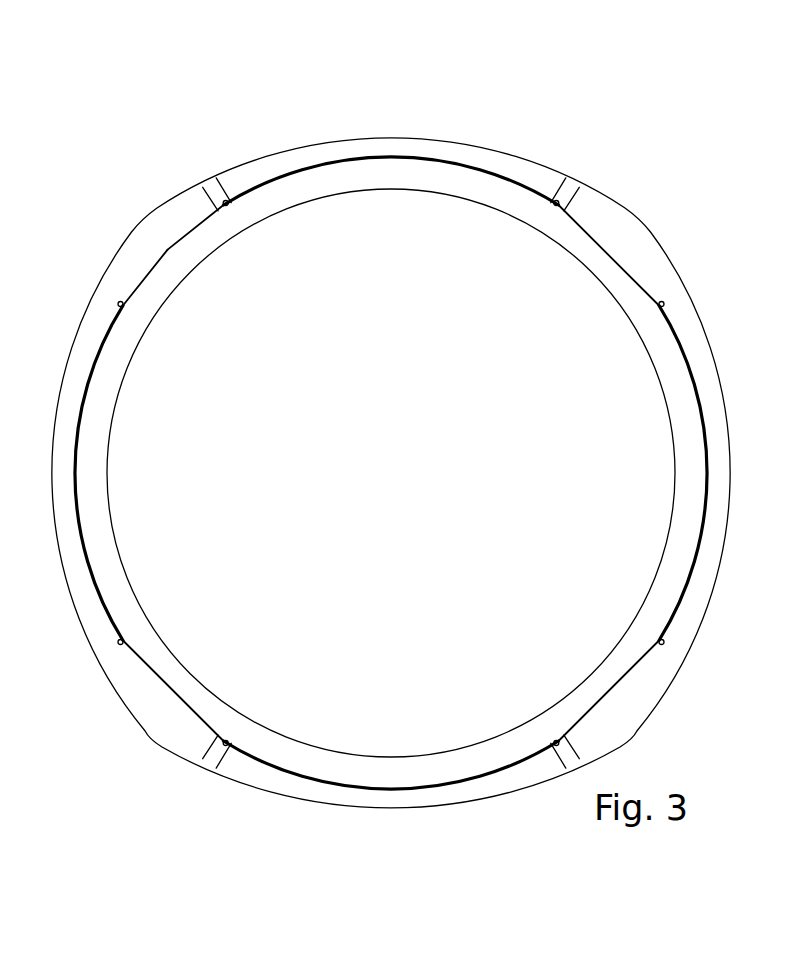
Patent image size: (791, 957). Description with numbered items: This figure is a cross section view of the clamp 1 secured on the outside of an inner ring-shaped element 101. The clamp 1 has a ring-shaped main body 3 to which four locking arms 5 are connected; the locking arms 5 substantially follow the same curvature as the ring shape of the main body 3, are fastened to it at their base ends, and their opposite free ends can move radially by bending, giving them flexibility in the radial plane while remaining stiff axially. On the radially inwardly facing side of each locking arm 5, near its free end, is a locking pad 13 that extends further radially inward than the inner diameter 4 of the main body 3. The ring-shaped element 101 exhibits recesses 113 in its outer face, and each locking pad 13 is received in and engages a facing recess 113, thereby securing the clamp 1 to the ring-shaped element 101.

The clamp 1 is at (129, 83).
The ring-shaped main body 3 is at (268, 162).
The inner diameter 4 is at (290, 176).
The locking arm 5 is at (84, 346).
The locking pad 13 is at (178, 248).
The ring-shaped element 101 is at (433, 178).
The recess 113 is at (148, 281).